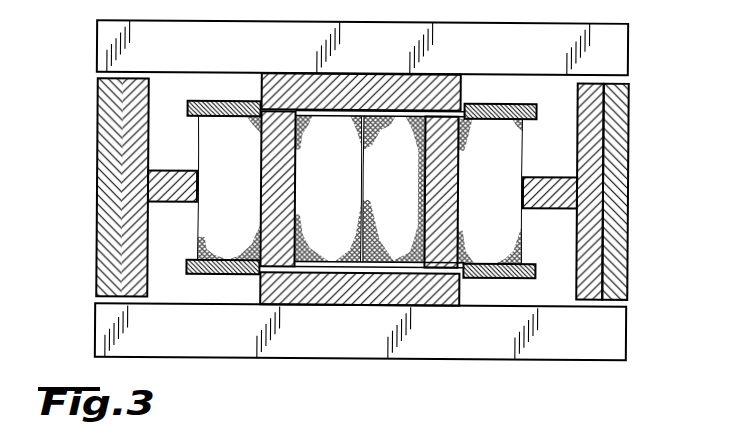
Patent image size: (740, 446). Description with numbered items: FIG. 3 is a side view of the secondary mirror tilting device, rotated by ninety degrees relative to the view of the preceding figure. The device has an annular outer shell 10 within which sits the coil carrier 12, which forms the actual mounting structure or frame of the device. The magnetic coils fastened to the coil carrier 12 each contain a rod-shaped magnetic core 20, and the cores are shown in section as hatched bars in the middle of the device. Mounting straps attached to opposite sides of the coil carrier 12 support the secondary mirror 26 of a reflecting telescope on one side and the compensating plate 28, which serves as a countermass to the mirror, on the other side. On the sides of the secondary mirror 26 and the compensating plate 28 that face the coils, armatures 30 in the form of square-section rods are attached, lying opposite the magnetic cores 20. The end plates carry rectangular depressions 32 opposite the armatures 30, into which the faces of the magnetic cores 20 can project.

The annular outer shell 10 is at (618, 137).
The coil carrier 12 is at (589, 99).
The magnetic core 20 is at (273, 172).
The secondary mirror 26 is at (612, 334).
The compensating plate 28 is at (612, 47).
The armature 30 is at (284, 99).
The rectangular depression 32 is at (464, 106).